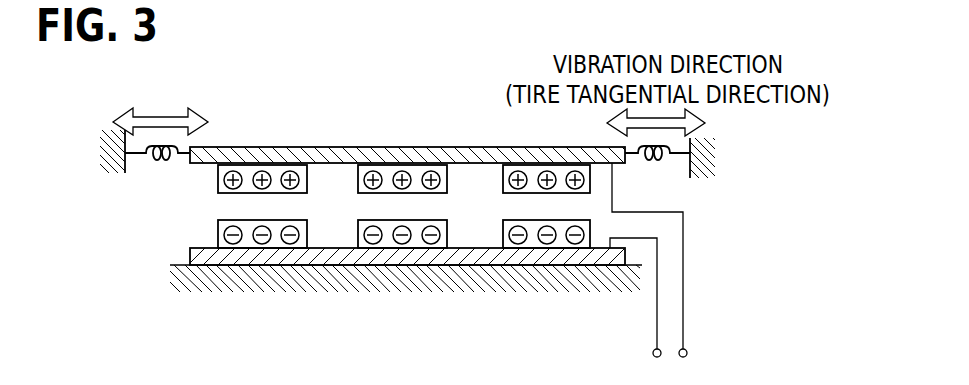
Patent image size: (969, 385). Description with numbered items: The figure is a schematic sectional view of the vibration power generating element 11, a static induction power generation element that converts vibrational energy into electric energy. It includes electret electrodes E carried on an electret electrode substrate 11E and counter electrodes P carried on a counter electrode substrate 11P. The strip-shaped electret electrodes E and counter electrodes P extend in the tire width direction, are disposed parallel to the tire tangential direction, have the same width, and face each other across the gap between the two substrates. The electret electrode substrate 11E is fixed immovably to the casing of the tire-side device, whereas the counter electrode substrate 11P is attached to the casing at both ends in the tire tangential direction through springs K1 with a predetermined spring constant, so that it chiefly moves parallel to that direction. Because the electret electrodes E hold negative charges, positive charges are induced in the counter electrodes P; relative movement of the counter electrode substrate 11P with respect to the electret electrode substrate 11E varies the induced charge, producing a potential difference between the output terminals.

The vibration power generating element 11 is at (415, 56).
The counter electrode substrate 11P is at (222, 146).
The counter electrodes P is at (278, 170).
The electret electrode substrate 11E is at (287, 262).
The electret electrodes E is at (306, 232).
The springs K1 is at (165, 165).